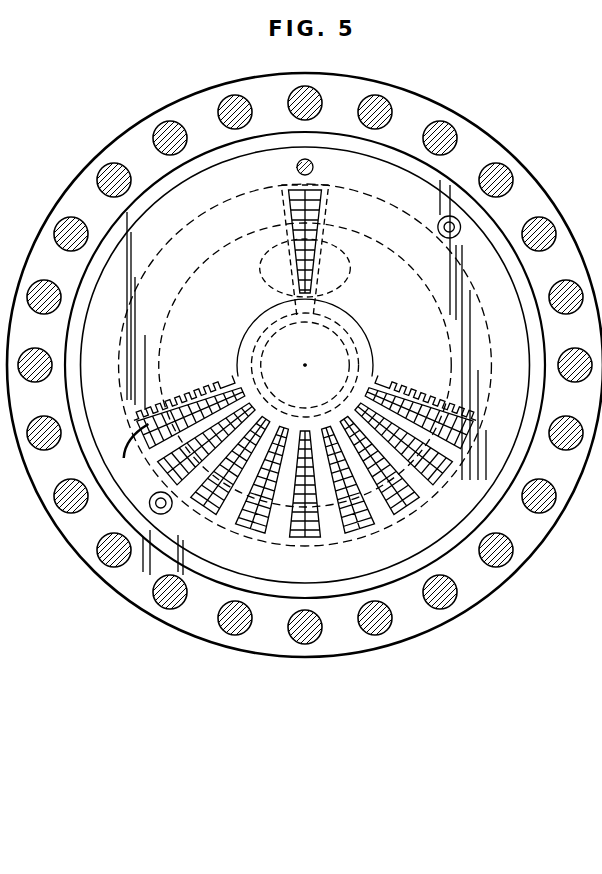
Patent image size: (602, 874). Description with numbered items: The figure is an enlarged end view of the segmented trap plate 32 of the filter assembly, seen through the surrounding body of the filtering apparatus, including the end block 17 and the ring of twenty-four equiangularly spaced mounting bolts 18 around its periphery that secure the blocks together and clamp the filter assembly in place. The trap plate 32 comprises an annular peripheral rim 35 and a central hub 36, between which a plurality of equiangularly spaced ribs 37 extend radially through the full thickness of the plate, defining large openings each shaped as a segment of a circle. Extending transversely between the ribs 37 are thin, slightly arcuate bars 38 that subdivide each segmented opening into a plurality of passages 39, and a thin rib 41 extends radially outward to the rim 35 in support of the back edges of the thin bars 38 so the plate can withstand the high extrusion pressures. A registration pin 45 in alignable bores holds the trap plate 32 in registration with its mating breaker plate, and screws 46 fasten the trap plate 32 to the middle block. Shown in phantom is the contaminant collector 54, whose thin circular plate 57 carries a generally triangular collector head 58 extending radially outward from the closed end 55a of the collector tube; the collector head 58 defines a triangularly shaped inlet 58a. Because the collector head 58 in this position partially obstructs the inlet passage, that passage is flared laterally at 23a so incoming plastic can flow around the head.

The end block 17 is at (478, 124).
The mounting bolts 18 is at (392, 108).
The trap plate 32 is at (213, 182).
The rim 35 is at (305, 365).
The registration pin 45 is at (297, 167).
The flared portion of inlet passage 23a is at (330, 250).
The collector head 58 is at (284, 268).
The inlet 58a is at (344, 255).
The central hub 36 is at (292, 337).
The closed end 55a is at (343, 365).
The contaminant collector 54 is at (289, 365).
The circular plate 57 is at (268, 365).
The screws 46 is at (271, 375).
The ribs 37 is at (294, 430).
The passages 39 is at (218, 470).
The thin rib 41 is at (289, 503).
The thin bars 38 is at (392, 472).